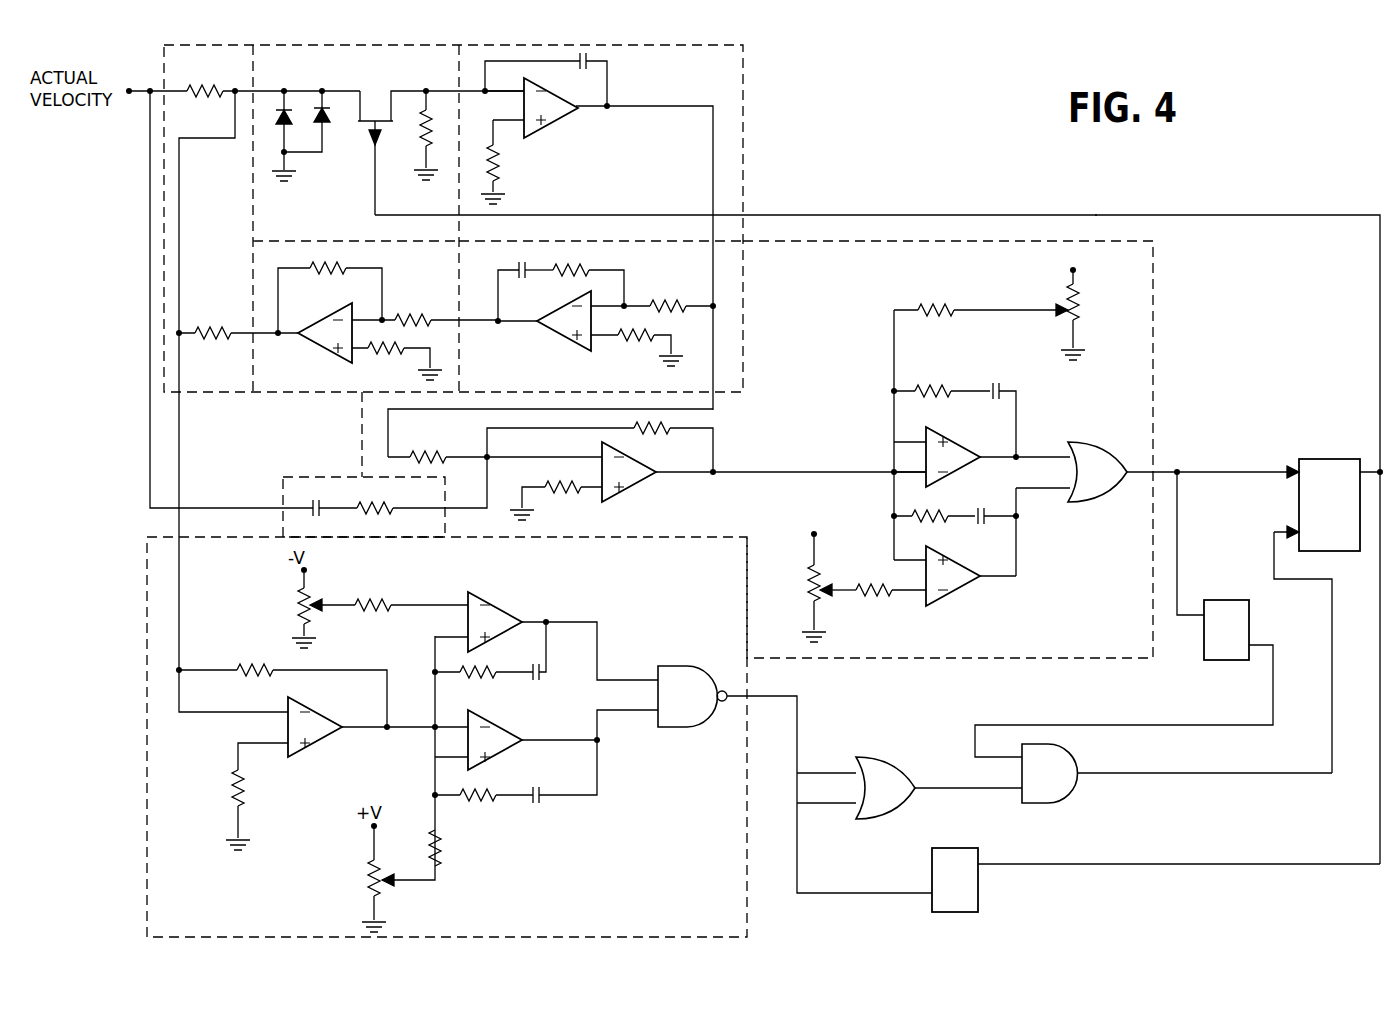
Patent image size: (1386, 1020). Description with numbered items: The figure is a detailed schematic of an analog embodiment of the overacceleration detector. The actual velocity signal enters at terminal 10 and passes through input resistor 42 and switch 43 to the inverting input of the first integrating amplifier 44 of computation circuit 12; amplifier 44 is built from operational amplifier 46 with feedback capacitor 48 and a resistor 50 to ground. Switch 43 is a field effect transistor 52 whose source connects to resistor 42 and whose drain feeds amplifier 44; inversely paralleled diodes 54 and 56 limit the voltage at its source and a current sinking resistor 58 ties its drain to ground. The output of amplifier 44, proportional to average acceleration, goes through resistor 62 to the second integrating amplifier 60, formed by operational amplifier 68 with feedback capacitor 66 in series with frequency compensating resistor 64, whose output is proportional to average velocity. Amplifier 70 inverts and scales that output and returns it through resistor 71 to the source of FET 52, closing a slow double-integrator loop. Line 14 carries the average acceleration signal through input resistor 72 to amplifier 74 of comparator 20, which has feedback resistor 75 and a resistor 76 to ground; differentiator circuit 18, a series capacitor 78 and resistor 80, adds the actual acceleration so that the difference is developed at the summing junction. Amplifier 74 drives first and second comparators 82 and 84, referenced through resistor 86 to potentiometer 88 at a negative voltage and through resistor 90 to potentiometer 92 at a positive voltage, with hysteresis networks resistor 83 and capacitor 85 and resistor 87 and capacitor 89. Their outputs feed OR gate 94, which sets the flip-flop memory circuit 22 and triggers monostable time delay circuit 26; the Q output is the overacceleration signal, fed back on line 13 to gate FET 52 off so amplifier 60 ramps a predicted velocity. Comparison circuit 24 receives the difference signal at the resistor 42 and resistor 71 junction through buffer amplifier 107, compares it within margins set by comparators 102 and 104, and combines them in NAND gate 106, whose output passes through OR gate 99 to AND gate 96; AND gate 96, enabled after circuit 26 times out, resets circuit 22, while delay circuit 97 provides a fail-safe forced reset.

The terminal 10 is at (128, 88).
The computation circuit 12 is at (743, 82).
The line 13 is at (1092, 215).
The line 14 is at (713, 412).
The differentiator circuit 18 is at (304, 477).
The comparator 20 is at (1127, 391).
The memory circuit 22 is at (1330, 458).
The comparison circuit 24 is at (664, 839).
The time delay circuit 26 is at (1226, 598).
The input resistor 42 is at (206, 89).
The switch 43 is at (354, 69).
The first integrating amplifier 44 is at (616, 192).
The operational amplifier 46 is at (555, 118).
The feedback capacitor 48 is at (590, 70).
The resistor 50 is at (500, 160).
The field effect transistor 52 is at (386, 86).
The diode 54 is at (292, 117).
The diode 56 is at (330, 115).
The current sinking resistor 58 is at (422, 136).
The second integrating amplifier 60 is at (514, 369).
The resistor 62 is at (675, 298).
The frequency compensating resistor 64 is at (575, 272).
The capacitor 66 is at (511, 262).
The operational amplifier 68 is at (548, 326).
The amplifier 70 is at (427, 273).
The resistor 71 is at (218, 306).
The input resistor 72 is at (442, 452).
The amplifier 74 is at (636, 486).
The feedback resistor 75 is at (670, 436).
The resistor 76 is at (557, 496).
The capacitor 78 is at (318, 500).
The resistor 80 is at (394, 500).
The first comparator 82 is at (961, 452).
The resistor 83 is at (937, 380).
The second comparator 84 is at (952, 592).
The capacitor 85 is at (998, 380).
The resistor 86 is at (937, 300).
The resistor 87 is at (930, 512).
The potentiometer 88 is at (1080, 312).
The capacitor 89 is at (978, 526).
The resistor 90 is at (876, 598).
The potentiometer 92 is at (806, 594).
The OR gate 94 is at (1106, 452).
The AND gate 96 is at (1080, 766).
The delay circuit 97 is at (980, 852).
The OR gate 99 is at (922, 776).
The comparator 102 is at (506, 602).
The comparator 104 is at (518, 728).
The NAND gate 106 is at (695, 662).
The buffer amplifier 107 is at (336, 742).